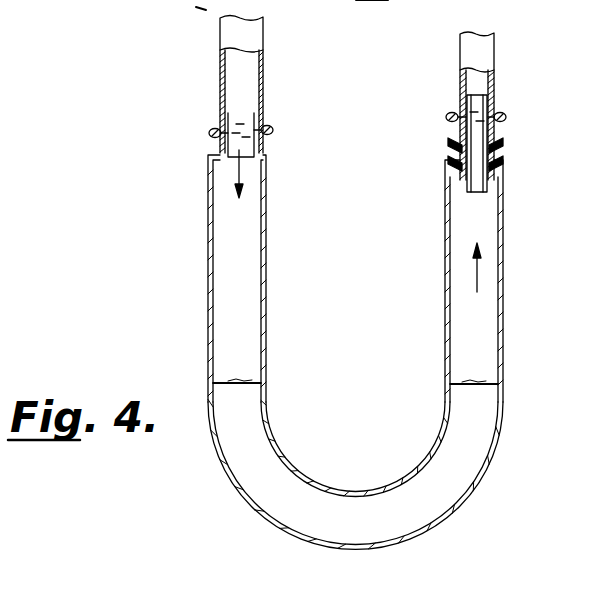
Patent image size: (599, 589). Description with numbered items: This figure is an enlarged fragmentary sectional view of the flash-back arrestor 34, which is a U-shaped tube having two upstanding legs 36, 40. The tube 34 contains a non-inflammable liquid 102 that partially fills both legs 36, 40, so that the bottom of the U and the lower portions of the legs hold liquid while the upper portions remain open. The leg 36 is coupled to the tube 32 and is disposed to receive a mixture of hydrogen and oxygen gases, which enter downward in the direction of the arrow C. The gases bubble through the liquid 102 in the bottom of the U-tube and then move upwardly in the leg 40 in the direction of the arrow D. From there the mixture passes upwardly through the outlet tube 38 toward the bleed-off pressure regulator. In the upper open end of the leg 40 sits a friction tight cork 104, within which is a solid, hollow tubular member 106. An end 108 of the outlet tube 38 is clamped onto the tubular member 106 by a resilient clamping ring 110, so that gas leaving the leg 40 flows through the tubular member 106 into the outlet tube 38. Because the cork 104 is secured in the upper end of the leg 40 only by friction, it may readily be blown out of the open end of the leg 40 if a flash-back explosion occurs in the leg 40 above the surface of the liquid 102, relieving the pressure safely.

The tube 32 is at (220, 43).
The flash-back arrestor 34 is at (289, 262).
The leg 36 is at (208, 232).
The outlet tube 38 is at (484, 51).
The leg 40 is at (503, 208).
The non-inflammable liquid 102 is at (238, 381).
The friction tight cork 104 is at (503, 152).
The hollow tubular member 106 is at (448, 152).
The end of outlet tube 108 is at (490, 108).
The resilient clamping ring 110 is at (455, 110).
The arrow C is at (245, 175).
The arrow D is at (478, 272).